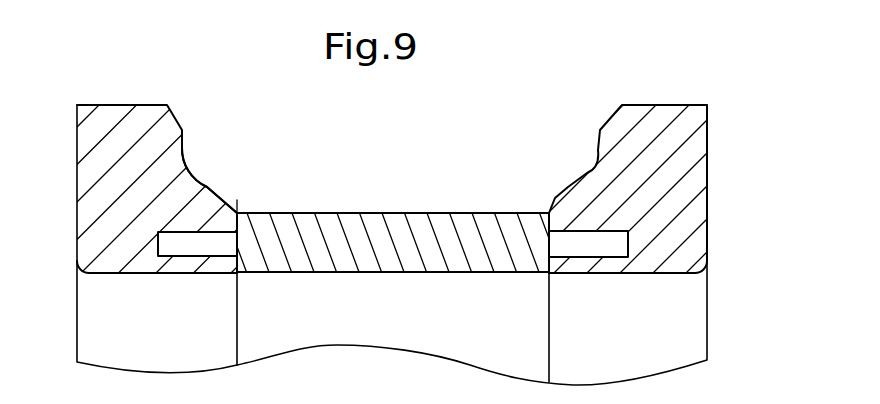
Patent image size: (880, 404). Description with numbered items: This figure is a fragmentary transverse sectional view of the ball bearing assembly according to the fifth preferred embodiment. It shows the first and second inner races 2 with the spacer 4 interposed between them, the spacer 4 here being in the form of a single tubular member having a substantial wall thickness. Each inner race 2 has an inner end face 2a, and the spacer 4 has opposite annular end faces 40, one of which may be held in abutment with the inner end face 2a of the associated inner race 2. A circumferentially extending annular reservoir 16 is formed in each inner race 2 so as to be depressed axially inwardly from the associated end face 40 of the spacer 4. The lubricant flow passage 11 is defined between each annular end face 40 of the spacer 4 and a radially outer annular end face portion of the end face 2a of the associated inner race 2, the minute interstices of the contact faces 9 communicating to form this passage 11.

The inner race 2 is at (100, 203).
The inner end face of inner race 2a is at (240, 262).
The spacer 4 is at (397, 215).
The contact face 9 is at (250, 213).
The lubricant flow passage 11 is at (240, 198).
The annular reservoir 16 is at (188, 248).
The end face of spacer 40 is at (213, 189).